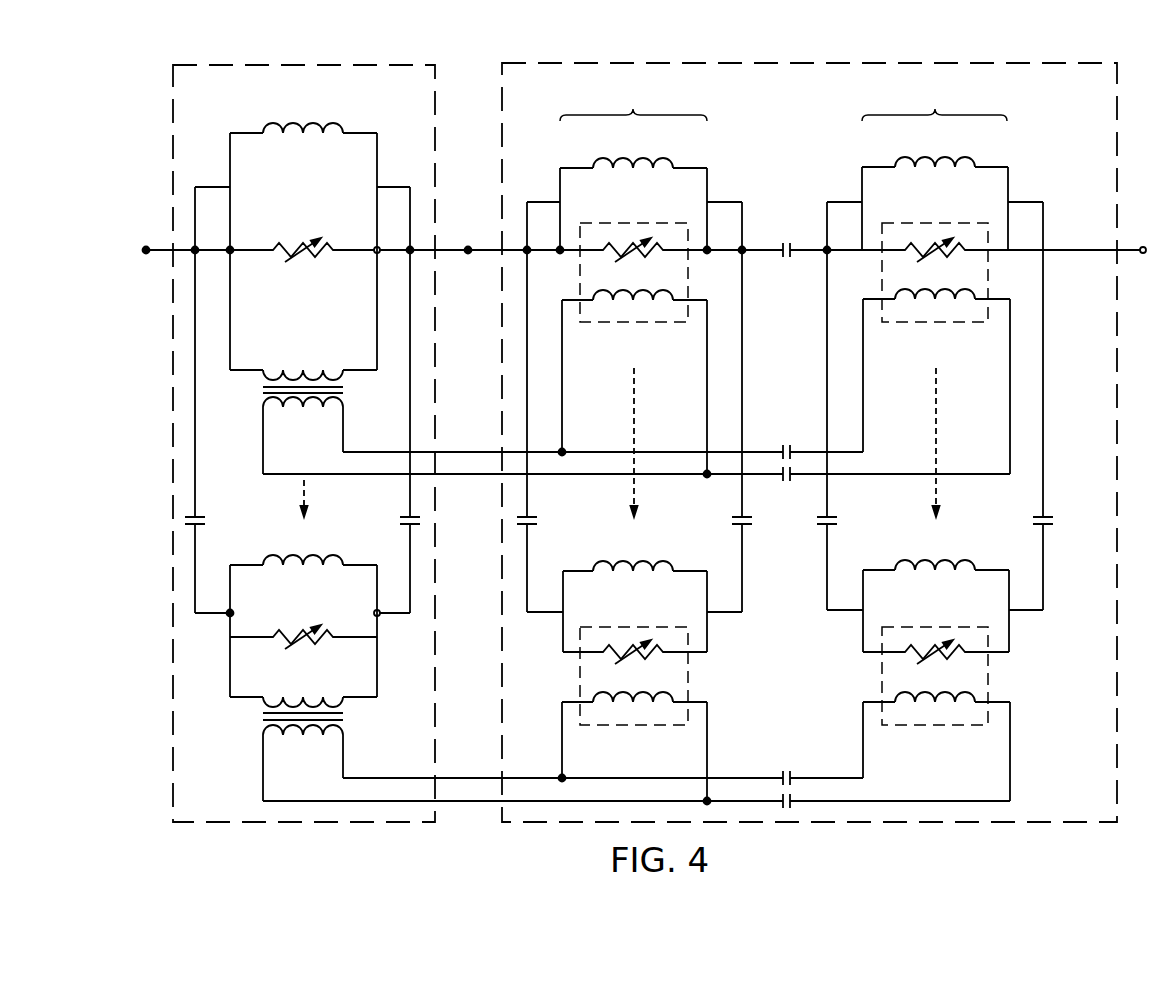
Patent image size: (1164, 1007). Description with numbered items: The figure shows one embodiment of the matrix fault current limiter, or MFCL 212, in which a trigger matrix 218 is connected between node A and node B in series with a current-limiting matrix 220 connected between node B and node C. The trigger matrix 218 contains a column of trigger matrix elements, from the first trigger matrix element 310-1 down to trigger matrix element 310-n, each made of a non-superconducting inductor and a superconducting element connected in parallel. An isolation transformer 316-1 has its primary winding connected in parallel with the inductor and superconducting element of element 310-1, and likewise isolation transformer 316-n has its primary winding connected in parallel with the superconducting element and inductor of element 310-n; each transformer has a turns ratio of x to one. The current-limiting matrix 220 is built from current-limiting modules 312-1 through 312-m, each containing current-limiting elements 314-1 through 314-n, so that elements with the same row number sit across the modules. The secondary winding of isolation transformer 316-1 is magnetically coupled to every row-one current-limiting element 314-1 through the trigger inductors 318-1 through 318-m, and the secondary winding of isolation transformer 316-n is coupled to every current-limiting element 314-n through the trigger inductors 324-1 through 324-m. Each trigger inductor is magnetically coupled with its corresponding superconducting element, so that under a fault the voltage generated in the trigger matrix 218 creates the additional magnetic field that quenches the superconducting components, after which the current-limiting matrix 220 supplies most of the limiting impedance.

The MFCL 212 is at (623, 412).
The trigger matrix 218 is at (317, 421).
The current-limiting matrix 220 is at (812, 421).
The first trigger matrix element 310-1 is at (296, 272).
The trigger matrix element 310-n is at (301, 663).
The current-limiting module 312-1 is at (671, 441).
The current-limiting module 312-m is at (970, 441).
The current-limiting element 314-1 is at (822, 194).
The current-limiting element 314-n is at (842, 618).
The isolation transformer 316-1 is at (339, 407).
The isolation transformer 316-n is at (342, 732).
The trigger inductor 318-1 is at (693, 348).
The trigger inductor 318-m is at (993, 348).
The trigger inductor 324-1 is at (694, 714).
The trigger inductor 324-m is at (984, 714).